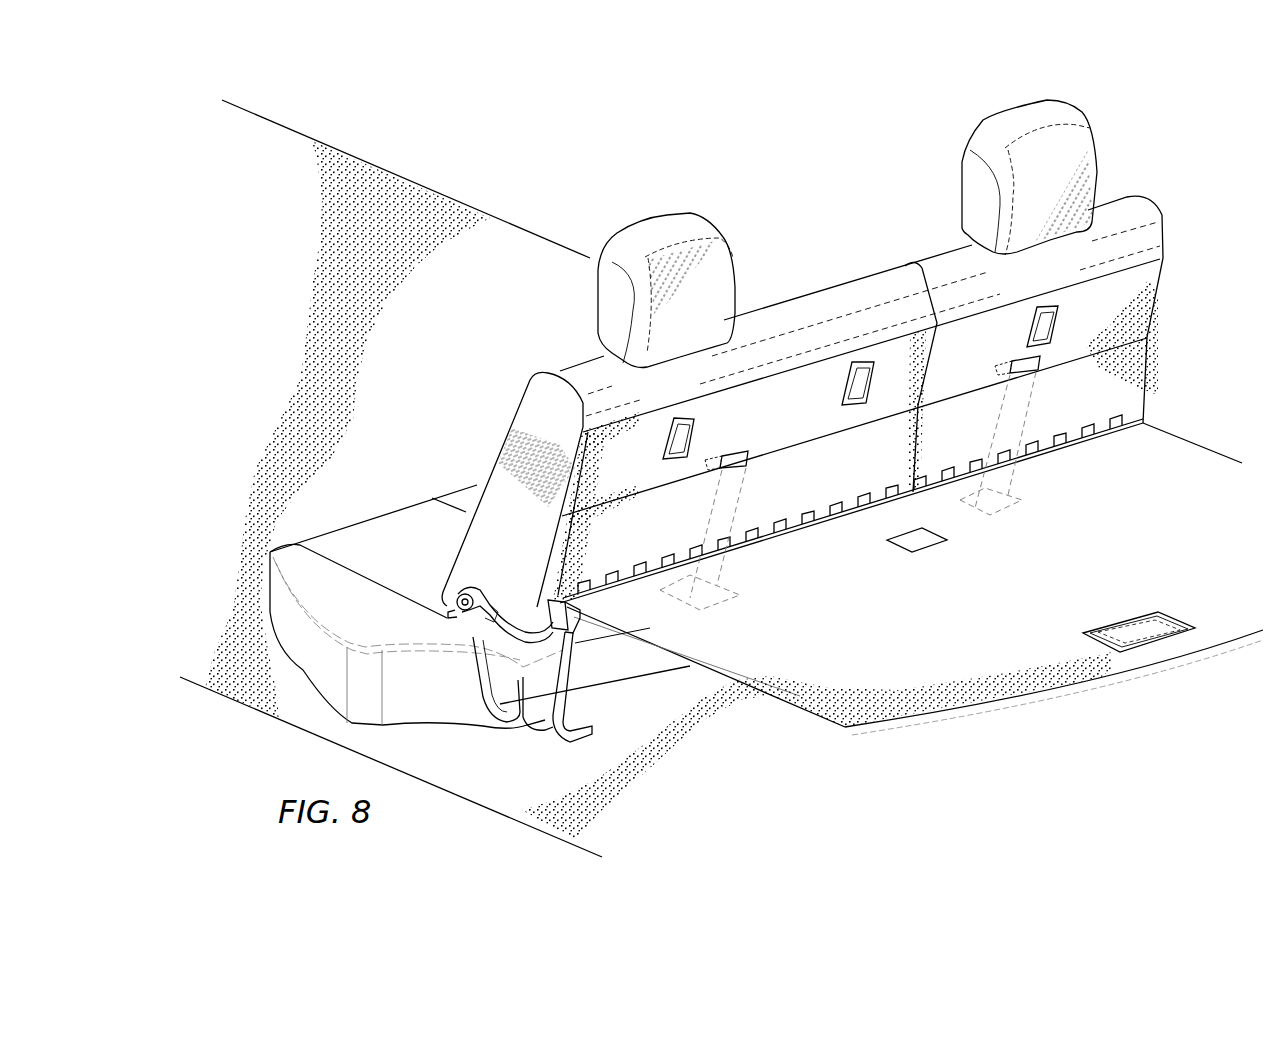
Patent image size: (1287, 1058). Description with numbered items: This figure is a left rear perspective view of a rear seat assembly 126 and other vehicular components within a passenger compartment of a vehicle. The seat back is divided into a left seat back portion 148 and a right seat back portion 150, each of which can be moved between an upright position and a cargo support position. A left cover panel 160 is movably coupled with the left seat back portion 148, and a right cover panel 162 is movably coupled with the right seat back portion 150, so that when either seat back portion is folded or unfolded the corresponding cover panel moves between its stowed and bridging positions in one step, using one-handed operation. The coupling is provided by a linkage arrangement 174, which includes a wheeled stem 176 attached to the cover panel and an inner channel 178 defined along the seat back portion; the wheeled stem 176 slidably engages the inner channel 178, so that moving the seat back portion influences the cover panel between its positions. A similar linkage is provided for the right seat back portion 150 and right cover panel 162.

The vehicle seat assembly 126 is at (734, 132).
The left seat back portion 148 is at (527, 406).
The right seat back portion 150 is at (1137, 206).
The left cover panel 160 is at (811, 453).
The right cover panel 162 is at (1122, 388).
The linkage arrangement 174 is at (723, 436).
The wheeled stem 176 is at (733, 441).
The inner channel 178 is at (730, 505).